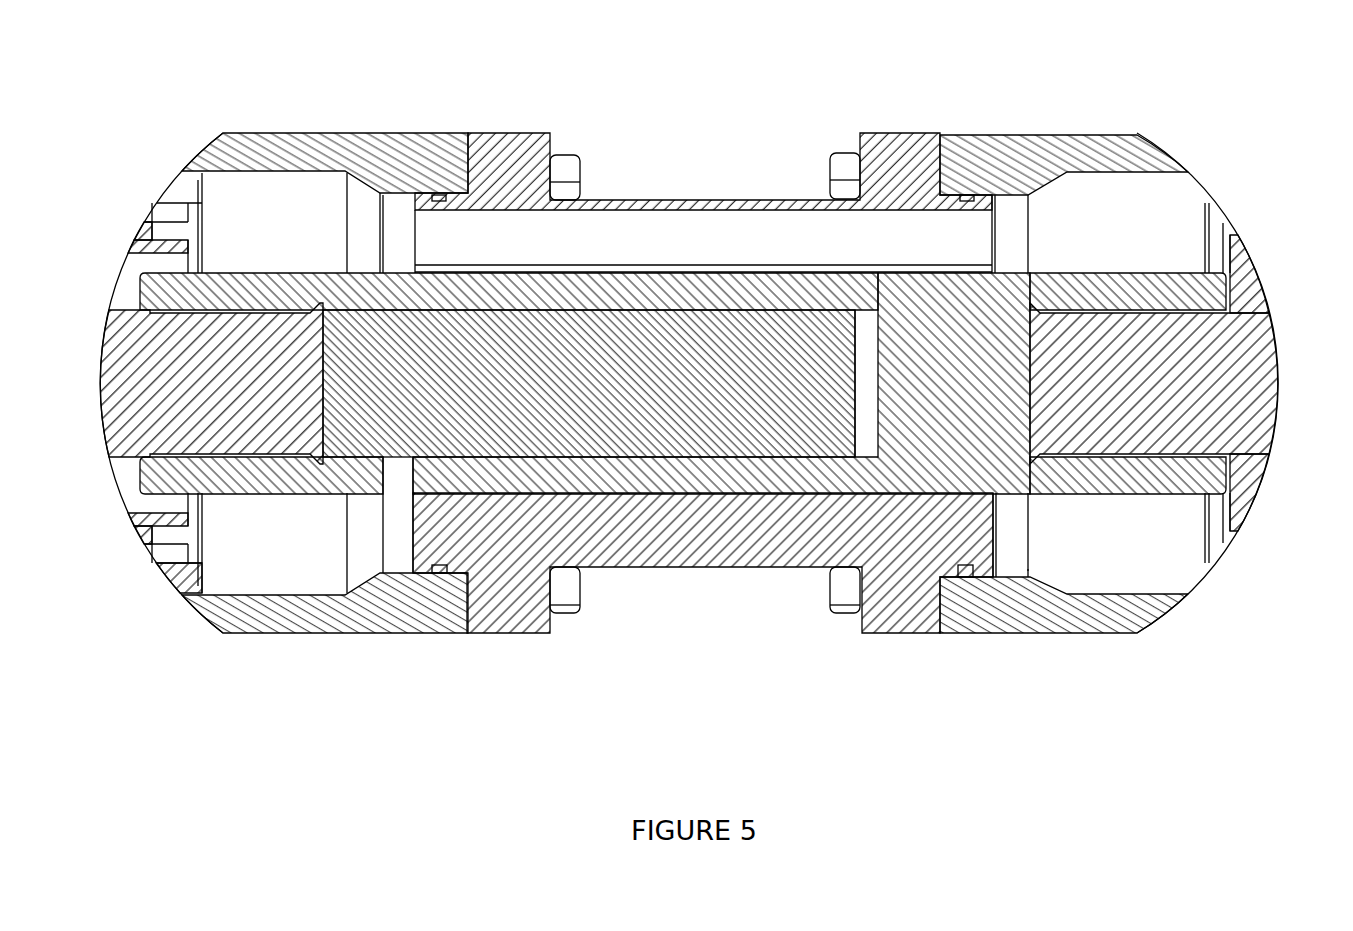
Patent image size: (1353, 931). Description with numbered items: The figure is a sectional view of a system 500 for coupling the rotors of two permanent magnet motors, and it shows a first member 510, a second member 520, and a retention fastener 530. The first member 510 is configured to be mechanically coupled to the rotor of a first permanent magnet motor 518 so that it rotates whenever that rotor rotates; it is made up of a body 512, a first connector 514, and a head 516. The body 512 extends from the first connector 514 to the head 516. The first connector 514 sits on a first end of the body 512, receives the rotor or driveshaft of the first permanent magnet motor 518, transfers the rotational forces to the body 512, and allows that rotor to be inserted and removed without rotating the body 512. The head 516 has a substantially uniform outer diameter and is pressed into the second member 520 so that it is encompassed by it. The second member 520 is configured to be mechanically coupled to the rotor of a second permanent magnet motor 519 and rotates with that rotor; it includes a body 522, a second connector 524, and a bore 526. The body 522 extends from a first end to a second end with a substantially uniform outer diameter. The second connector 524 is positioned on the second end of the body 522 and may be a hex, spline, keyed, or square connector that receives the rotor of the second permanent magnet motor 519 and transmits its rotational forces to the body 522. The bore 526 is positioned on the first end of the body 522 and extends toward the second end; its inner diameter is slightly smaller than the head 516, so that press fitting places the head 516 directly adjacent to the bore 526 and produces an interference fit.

The system 500 is at (200, 64).
The first member 510 is at (328, 298).
The body 512 is at (372, 393).
The first connector 514 is at (247, 462).
The head 516 is at (602, 425).
The first permanent magnet motor 518 is at (160, 404).
The second permanent magnet motor 519 is at (1238, 407).
The second member 520 is at (903, 320).
The body 522 is at (966, 462).
The second connector 524 is at (1128, 303).
The bore 526 is at (733, 442).
The retention fastener 530 is at (522, 163).